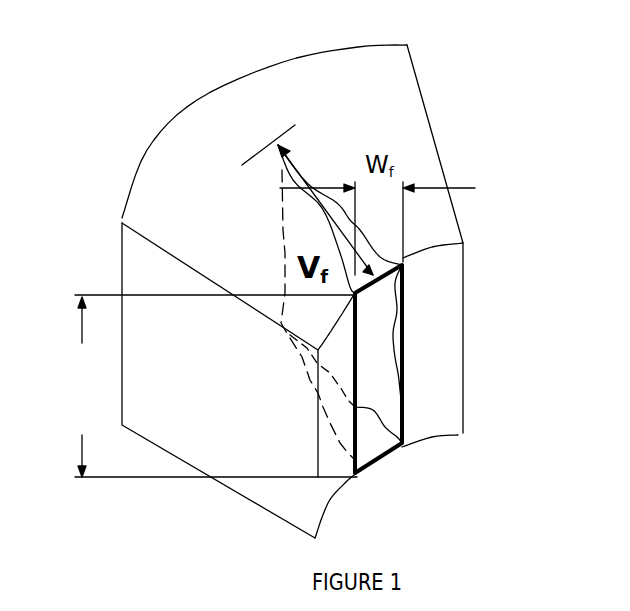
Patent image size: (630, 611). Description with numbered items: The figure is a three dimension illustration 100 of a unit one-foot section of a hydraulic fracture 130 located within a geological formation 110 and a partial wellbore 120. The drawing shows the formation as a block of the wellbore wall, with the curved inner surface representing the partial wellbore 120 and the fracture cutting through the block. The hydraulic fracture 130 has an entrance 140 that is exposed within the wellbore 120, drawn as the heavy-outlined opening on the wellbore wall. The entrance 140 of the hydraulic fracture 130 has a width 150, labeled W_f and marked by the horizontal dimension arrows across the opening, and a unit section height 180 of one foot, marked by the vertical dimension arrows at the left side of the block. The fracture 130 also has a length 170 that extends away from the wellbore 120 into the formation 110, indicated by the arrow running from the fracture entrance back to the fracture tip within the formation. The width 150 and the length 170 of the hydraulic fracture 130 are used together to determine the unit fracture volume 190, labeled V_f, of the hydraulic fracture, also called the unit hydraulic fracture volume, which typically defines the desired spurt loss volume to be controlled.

The three dimension illustration 100 is at (160, 95).
The geological formation 110 is at (423, 98).
The partial wellbore 120 is at (433, 283).
The hydraulic fracture 130 is at (348, 228).
The entrance 140 is at (375, 372).
The width 150 is at (413, 162).
The length 170 is at (322, 208).
The unit section height 180 is at (198, 386).
The unit fracture volume 190 is at (285, 277).